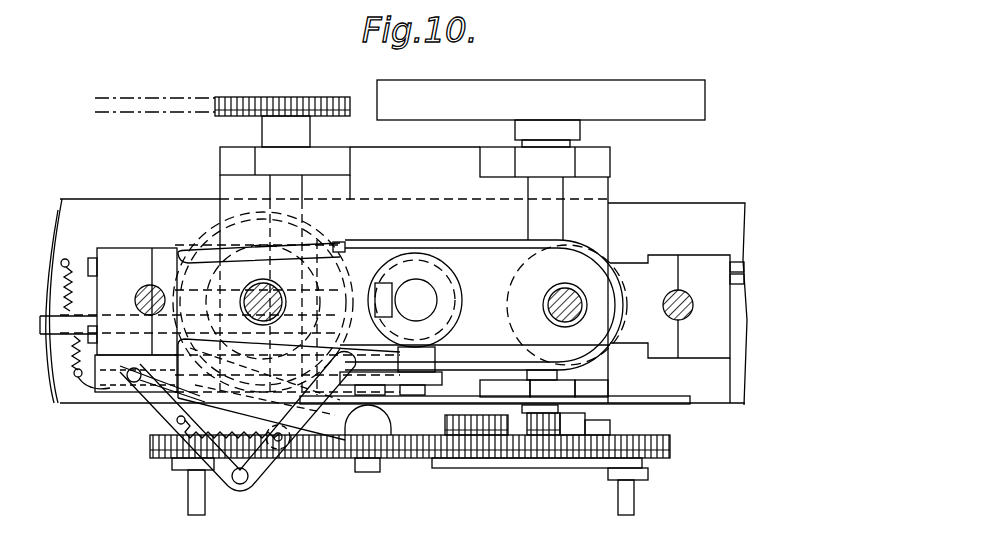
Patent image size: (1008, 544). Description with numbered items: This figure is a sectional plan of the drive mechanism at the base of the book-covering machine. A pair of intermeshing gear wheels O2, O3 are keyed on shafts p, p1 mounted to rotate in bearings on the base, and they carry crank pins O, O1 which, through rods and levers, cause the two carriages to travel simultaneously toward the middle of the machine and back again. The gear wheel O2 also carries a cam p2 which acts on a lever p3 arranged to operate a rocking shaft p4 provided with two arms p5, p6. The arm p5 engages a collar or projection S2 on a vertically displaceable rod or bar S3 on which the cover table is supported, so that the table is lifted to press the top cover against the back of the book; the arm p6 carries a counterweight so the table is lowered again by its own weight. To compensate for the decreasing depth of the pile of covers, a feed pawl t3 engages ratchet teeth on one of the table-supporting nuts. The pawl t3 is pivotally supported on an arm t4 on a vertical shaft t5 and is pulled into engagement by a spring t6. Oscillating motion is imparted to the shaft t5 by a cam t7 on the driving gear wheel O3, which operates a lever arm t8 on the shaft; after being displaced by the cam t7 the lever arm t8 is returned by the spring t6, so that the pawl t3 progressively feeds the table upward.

The arm p6 is at (62, 198).
The spring t6 is at (92, 248).
The shaft p1 is at (277, 186).
The rocking shaft p4 is at (345, 237).
The arm p5 is at (395, 290).
The shaft p is at (552, 221).
The collar or projection S2 is at (445, 275).
The vertically displaceable rod or bar S3 is at (425, 308).
The lever p3 is at (662, 400).
The crank pin O is at (632, 490).
The gear wheel O2 is at (588, 442).
The cam p2 is at (473, 423).
The cam t7 is at (372, 425).
The feed pawl t3 is at (267, 450).
The crank pin O1 is at (200, 490).
The gear wheel O3 is at (160, 455).
The arm t4 is at (167, 415).
The vertical shaft t5 is at (130, 385).
The lever arm t8 is at (192, 393).